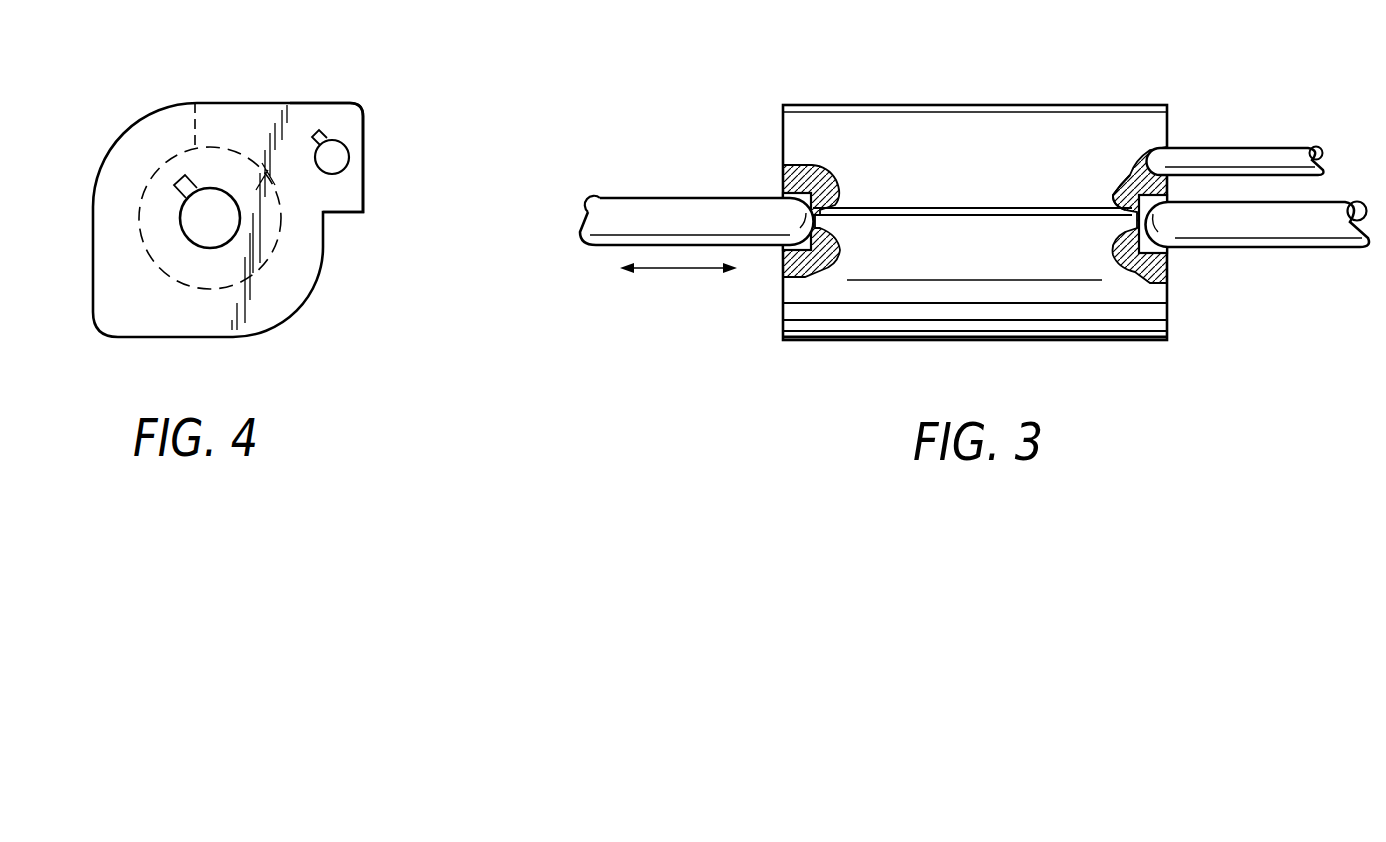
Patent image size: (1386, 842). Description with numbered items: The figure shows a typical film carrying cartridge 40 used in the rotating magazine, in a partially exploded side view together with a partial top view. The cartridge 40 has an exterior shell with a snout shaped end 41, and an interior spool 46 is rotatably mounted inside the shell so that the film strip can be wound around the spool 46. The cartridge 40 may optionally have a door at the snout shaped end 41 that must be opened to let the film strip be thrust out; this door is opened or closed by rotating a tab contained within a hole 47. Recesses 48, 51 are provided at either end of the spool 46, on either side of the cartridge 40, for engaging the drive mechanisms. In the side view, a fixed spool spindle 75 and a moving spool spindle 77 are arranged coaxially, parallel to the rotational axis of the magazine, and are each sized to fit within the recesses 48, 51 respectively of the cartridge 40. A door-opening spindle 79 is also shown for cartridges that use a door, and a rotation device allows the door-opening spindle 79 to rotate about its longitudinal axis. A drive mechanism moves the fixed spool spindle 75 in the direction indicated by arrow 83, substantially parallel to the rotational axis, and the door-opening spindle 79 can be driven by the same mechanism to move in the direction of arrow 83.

In FIG. 4, the cartridge 40 is at (302, 302).
In FIG. 3, the cartridge 40 is at (1169, 343).
In FIG. 4, the snout shaped end 41 is at (349, 103).
In FIG. 4, the interior spool 46 is at (197, 103).
In FIG. 3, the interior spool 46 is at (1113, 192).
In FIG. 4, the hole 47 is at (332, 157).
In FIG. 3, the hole 47 is at (1137, 168).
In FIG. 3, the recess 48 is at (783, 198).
In FIG. 3, the recess 51 is at (1168, 255).
In FIG. 3, the fixed spool spindle 75 is at (1305, 248).
In FIG. 3, the moving spool spindle 77 is at (668, 197).
In FIG. 3, the door-opening spindle 79 is at (1245, 148).
In FIG. 3, the arrow 83 is at (680, 270).